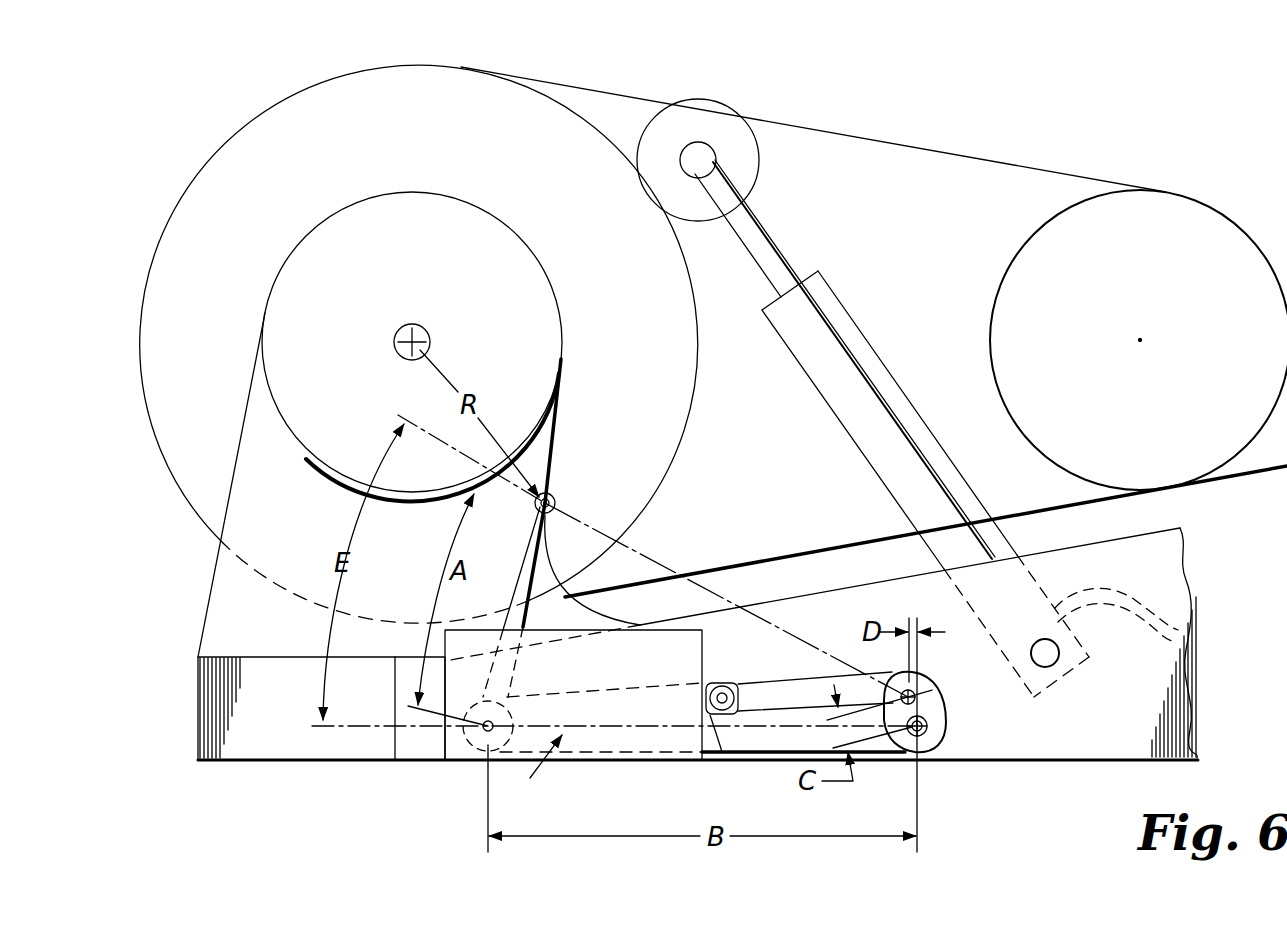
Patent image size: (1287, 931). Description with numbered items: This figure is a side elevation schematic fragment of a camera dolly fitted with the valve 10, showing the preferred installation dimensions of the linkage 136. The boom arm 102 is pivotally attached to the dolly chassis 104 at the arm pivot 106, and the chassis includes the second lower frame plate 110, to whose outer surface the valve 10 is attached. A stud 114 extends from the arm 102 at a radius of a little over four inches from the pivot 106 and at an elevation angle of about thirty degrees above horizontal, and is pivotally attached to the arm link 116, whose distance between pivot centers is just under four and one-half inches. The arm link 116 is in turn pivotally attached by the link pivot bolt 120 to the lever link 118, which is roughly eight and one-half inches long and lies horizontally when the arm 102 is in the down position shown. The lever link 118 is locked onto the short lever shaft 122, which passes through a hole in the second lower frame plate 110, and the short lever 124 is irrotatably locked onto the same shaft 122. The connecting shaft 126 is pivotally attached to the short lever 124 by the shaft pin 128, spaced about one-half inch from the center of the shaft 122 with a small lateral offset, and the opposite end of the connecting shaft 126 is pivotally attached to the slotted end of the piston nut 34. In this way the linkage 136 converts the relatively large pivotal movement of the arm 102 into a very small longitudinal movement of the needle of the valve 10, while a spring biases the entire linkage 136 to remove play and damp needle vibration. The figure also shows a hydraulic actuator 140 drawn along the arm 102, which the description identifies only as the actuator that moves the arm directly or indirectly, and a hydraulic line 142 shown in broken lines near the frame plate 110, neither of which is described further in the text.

The valve 10 is at (677, 676).
The piston nut 34 is at (722, 753).
The arm 102 is at (962, 211).
The dolly chassis 104 is at (249, 740).
The arm pivot 106 is at (432, 336).
The second lower frame plate 110 is at (1063, 760).
The stud 114 is at (548, 497).
The arm link 116 is at (556, 520).
The lever link 118 is at (607, 740).
The link pivot bolt 120 is at (466, 762).
The short lever shaft 122 is at (947, 729).
The short lever 124 is at (926, 718).
The connecting shaft 126 is at (768, 696).
The shaft pin 128 is at (911, 690).
The linkage 136 is at (532, 773).
The cylinder actuator 140 is at (818, 330).
The hose 142 is at (1153, 606).